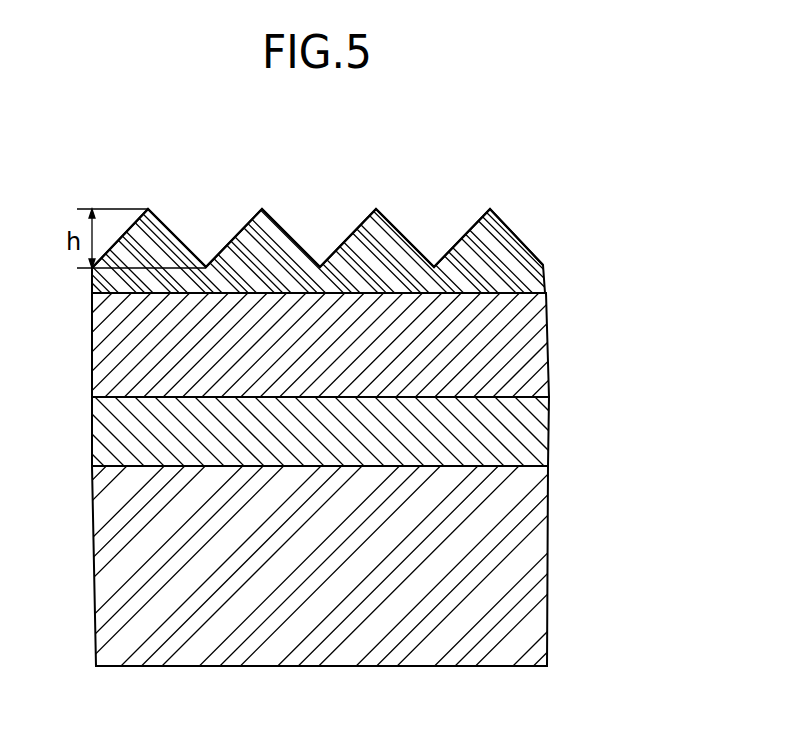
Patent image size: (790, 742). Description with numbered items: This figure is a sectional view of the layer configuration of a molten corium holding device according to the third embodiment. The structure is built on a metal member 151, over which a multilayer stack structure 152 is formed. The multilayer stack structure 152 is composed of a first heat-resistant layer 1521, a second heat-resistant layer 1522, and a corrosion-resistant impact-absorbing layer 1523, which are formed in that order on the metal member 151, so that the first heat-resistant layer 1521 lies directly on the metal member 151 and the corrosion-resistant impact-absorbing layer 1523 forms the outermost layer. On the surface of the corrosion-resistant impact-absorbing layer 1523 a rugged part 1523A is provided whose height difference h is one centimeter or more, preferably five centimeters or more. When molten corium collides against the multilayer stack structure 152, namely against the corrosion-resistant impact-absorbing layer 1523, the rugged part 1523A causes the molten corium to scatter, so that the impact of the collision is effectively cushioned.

The metal member 151 is at (535, 623).
The multilayer stack structure 152 is at (346, 335).
The first heat-resistant layer 1521 is at (533, 432).
The second heat-resistant layer 1522 is at (533, 358).
The corrosion-resistant impact-absorbing layer 1523 is at (532, 283).
The rugged part 1523A is at (362, 238).